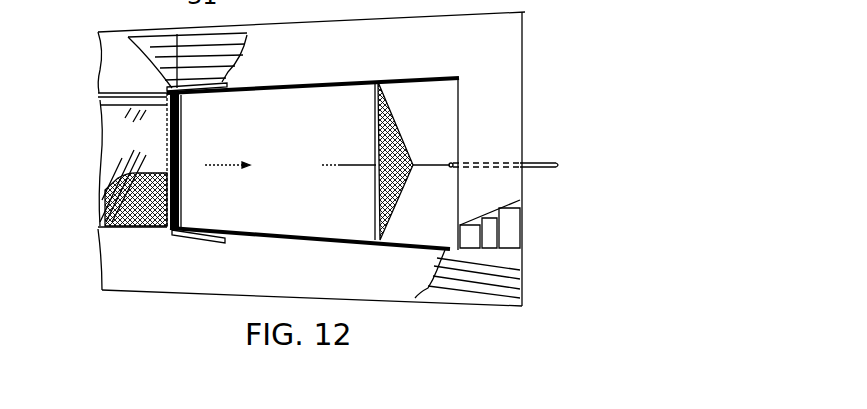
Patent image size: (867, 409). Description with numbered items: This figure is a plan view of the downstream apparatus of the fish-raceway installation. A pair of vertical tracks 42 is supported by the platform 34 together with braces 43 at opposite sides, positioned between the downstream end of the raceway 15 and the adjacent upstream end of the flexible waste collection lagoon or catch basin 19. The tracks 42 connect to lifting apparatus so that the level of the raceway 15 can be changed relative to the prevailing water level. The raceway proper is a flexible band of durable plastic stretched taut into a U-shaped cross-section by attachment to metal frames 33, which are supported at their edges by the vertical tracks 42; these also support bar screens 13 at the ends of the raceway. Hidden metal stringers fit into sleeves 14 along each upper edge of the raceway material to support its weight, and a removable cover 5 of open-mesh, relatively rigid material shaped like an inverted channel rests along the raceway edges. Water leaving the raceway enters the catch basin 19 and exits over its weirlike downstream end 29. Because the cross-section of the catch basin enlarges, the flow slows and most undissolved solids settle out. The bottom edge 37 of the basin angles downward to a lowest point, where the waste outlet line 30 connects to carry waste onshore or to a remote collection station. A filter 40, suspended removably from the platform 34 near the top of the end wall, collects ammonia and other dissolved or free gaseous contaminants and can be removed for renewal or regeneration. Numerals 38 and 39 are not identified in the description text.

The removable cover 5 is at (112, 222).
The bar screen 13 is at (181, 108).
The sleeve 14 is at (106, 111).
The raceway 15 is at (158, 163).
The waste collection lagoon or catch basin 19 is at (272, 87).
The weirlike downstream end 29 is at (456, 102).
The waste outlet line 30 is at (530, 162).
The metal frame 33 is at (167, 120).
The platform 34 is at (482, 52).
The bottom edge 37 is at (365, 163).
The louvers 38 is at (242, 51).
The duct interior 39 is at (292, 208).
The filter 40 is at (393, 207).
The vertical track 42 is at (172, 86).
The brace 43 is at (222, 80).